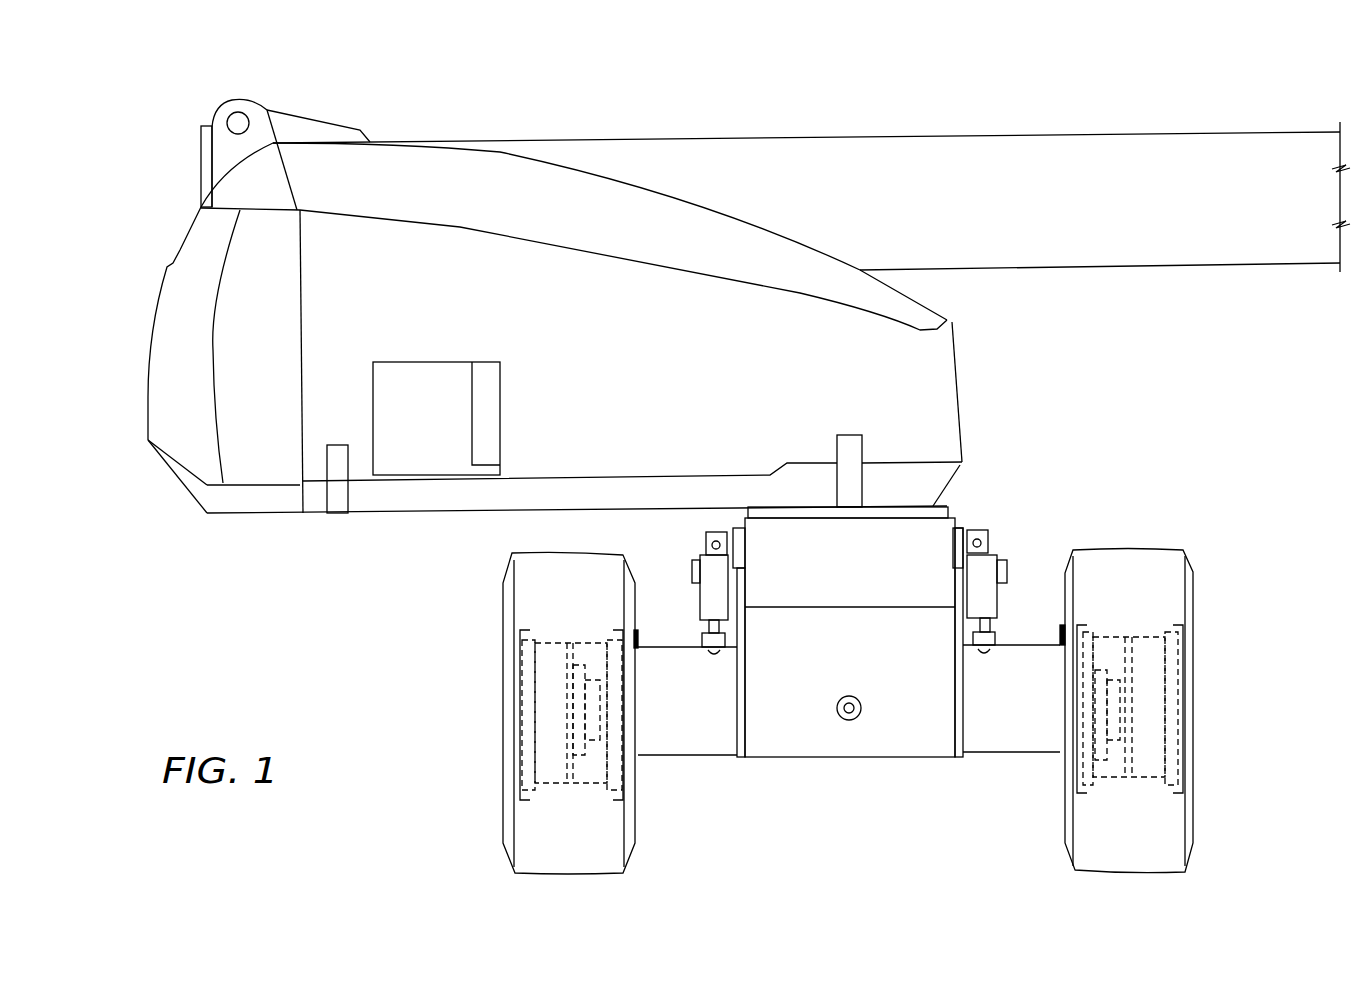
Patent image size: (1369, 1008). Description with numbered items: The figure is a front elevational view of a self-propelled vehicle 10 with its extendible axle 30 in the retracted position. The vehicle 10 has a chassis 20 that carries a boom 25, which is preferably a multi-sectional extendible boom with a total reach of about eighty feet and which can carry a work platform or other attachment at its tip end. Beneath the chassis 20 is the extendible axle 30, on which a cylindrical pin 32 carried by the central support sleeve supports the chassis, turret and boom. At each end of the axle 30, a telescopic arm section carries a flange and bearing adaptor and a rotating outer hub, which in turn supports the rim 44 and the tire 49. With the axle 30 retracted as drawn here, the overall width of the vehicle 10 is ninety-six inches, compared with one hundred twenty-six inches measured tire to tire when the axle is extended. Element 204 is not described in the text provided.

The self-propelled vehicle 10 is at (206, 101).
The chassis 20 is at (967, 522).
The boom 25 is at (1128, 133).
The extendible axle 30 is at (1030, 633).
The cylindrical pin 32 is at (849, 720).
The rim 44 is at (1147, 645).
The tire 49 is at (1152, 550).
The upper frame 204 is at (962, 318).